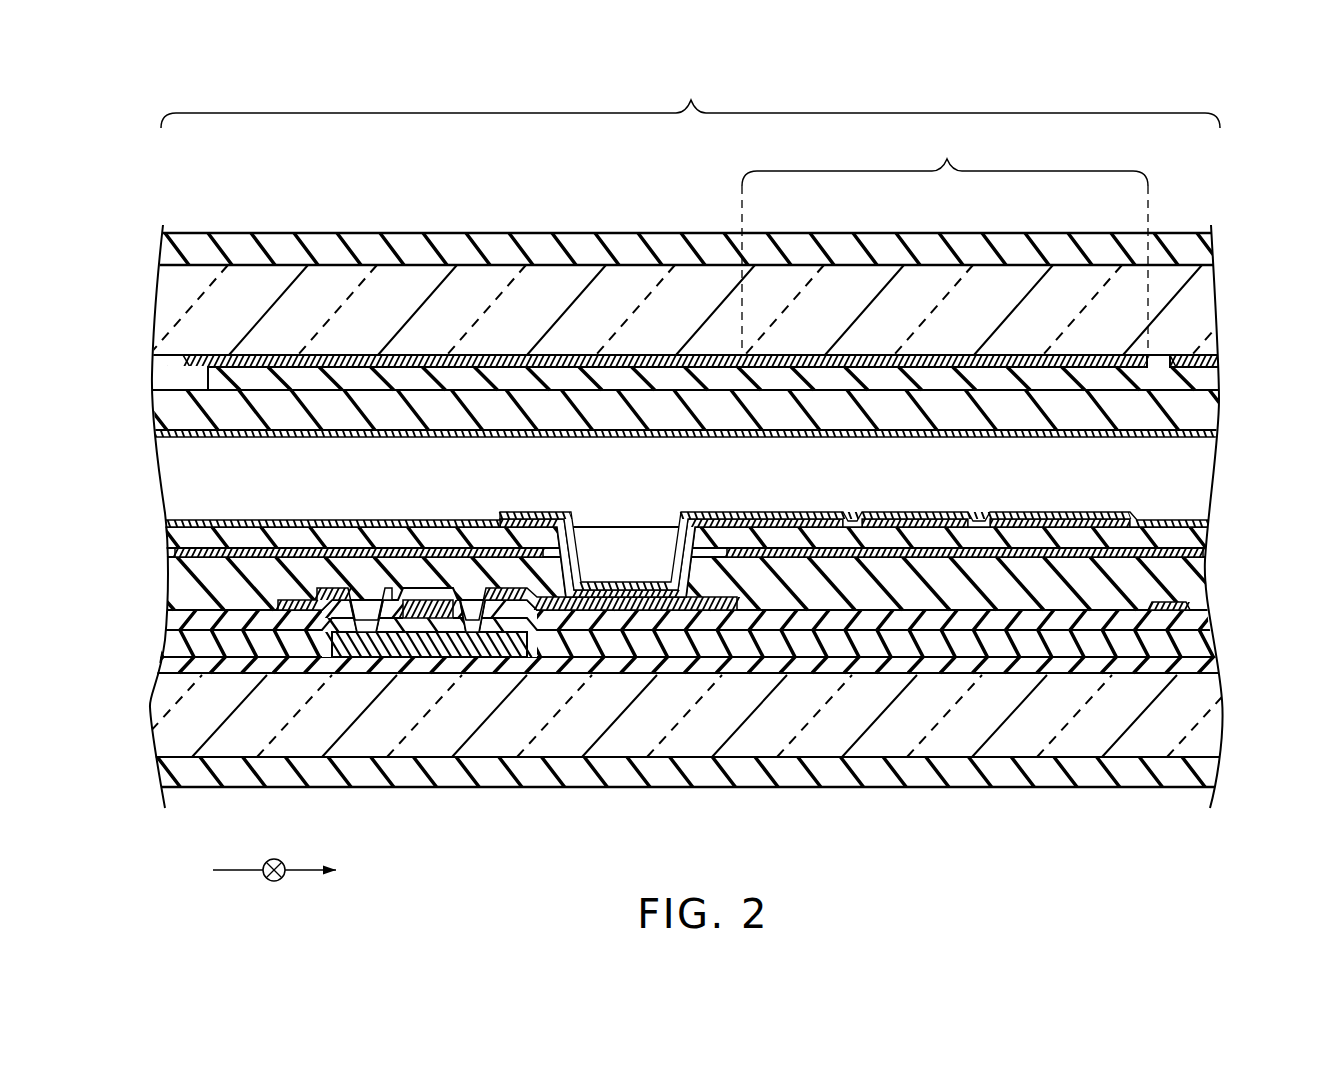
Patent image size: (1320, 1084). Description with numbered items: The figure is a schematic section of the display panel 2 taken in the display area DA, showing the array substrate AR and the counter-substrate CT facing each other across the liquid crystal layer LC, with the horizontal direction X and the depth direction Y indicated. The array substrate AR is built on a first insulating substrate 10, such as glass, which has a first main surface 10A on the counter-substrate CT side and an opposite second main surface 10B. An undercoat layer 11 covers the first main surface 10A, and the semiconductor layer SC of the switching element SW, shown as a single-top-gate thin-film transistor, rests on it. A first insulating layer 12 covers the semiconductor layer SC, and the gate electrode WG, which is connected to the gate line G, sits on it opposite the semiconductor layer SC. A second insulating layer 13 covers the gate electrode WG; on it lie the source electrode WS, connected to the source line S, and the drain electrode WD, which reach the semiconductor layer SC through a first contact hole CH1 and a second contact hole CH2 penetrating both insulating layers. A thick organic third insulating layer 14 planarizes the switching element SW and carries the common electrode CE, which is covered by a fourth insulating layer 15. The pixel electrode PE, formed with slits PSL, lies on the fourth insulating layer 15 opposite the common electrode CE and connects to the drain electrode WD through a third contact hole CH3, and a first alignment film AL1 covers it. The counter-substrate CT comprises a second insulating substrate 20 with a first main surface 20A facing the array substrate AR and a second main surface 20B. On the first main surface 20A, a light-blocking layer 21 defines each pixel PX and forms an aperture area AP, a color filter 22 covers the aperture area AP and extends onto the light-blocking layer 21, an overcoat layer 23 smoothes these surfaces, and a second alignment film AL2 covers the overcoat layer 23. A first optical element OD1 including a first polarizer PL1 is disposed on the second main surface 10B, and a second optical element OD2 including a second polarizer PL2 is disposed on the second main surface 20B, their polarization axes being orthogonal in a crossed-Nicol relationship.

The display panel 2 is at (1257, 193).
The first insulating substrate 10 is at (178, 712).
The first main surface 10A is at (1168, 662).
The second main surface 10B is at (1136, 762).
The undercoat layer 11 is at (182, 663).
The first insulating layer 12 is at (182, 640).
The second insulating layer 13 is at (182, 618).
The third insulating layer 14 is at (182, 580).
The fourth insulating layer 15 is at (182, 538).
The second insulating substrate 20 is at (172, 300).
The first main surface 20A is at (1202, 366).
The second main surface 20B is at (1160, 258).
The light-blocking layer 21 is at (185, 362).
The color filter 22 is at (175, 378).
The overcoat layer 23 is at (175, 410).
The first alignment film AL1 is at (182, 523).
The second alignment film AL2 is at (178, 434).
The liquid crystal layer LC is at (178, 470).
The array substrate AR is at (1242, 716).
The counter-substrate CT is at (1238, 310).
The first optical element OD1 is at (713, 778).
The first polarizer PL1 is at (1213, 770).
The second optical element OD2 is at (716, 256).
The second polarizer PL2 is at (1212, 248).
The display area DA is at (690, 96).
The aperture area AP is at (945, 239).
The pixel PX is at (783, 456).
The pixel electrode PE is at (745, 517).
The common electrode CE is at (283, 550).
The slit PSL is at (985, 519).
The first contact hole CH1 is at (367, 612).
The second contact hole CH2 is at (472, 612).
The third contact hole CH3 is at (585, 584).
The switching element SW is at (690, 646).
The semiconductor layer SC is at (400, 645).
The gate electrode WG is at (444, 715).
The gate line G is at (427, 612).
The source electrode WS is at (325, 592).
The source line S is at (1168, 601).
The drain electrode WD is at (510, 598).
The first direction X is at (289, 870).
The second direction Y is at (274, 885).